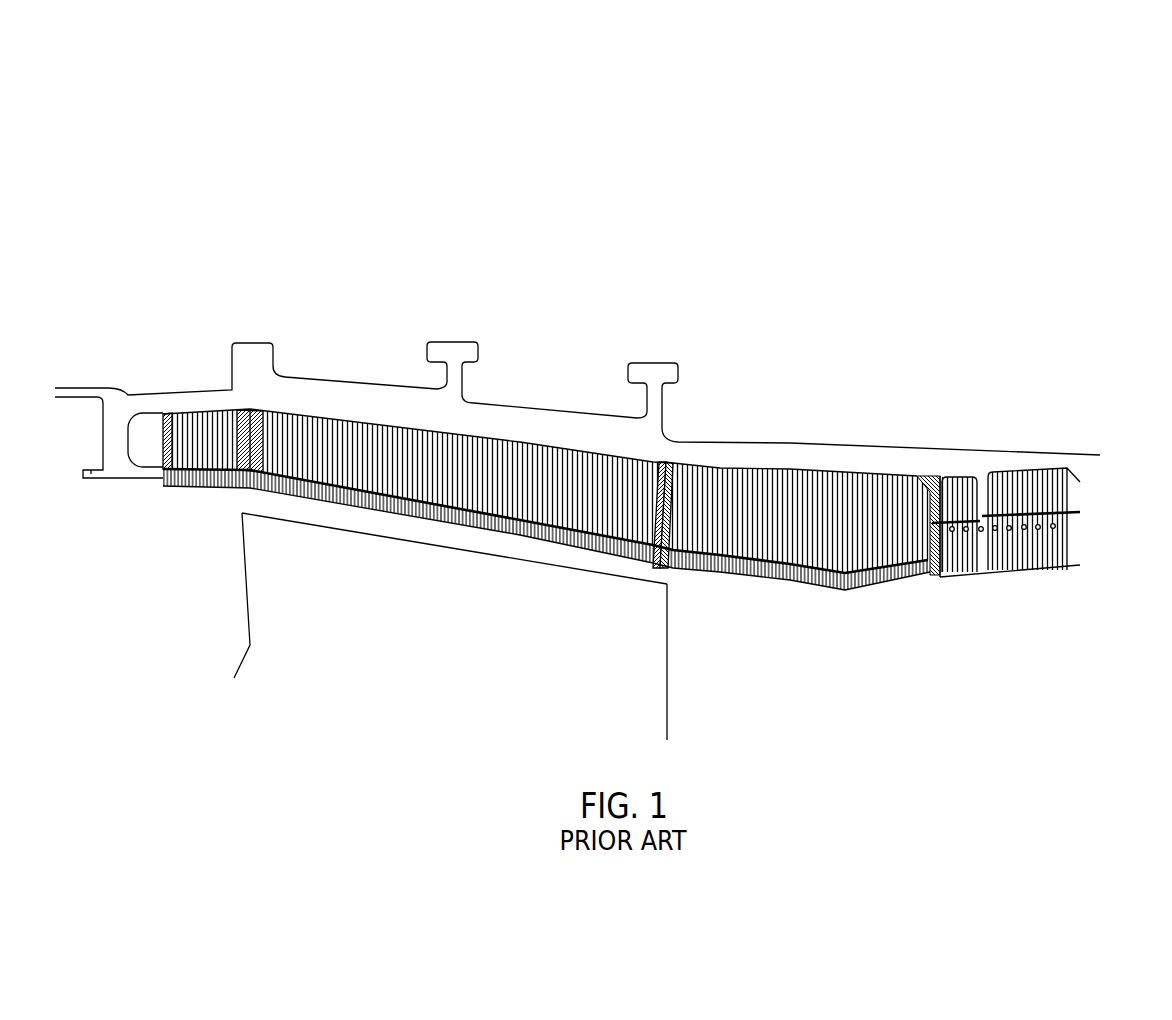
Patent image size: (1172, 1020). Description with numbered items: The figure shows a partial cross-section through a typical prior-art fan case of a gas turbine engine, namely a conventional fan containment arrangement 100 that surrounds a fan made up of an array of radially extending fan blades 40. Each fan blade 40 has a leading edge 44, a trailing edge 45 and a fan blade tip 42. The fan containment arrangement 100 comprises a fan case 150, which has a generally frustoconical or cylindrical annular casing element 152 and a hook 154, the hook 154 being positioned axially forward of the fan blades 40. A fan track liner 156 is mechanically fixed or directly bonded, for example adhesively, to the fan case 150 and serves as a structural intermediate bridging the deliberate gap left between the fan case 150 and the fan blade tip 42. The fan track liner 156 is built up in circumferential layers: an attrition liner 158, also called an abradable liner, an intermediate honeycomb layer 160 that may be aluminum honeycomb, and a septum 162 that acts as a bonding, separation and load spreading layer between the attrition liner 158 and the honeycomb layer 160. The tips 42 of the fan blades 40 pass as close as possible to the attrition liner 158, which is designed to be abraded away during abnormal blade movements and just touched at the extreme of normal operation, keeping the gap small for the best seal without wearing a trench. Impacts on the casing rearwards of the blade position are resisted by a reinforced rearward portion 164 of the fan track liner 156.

The fan containment arrangement 100 is at (577, 403).
The fan case 150 is at (773, 453).
The annular casing element 152 is at (897, 445).
The hook 154 is at (122, 458).
The fan track liner 156 is at (277, 422).
The attrition liner 158 is at (438, 487).
The honeycomb layer 160 is at (518, 443).
The septum 162 is at (588, 455).
The reinforced rearward portion 164 is at (880, 568).
The fan blade 40 is at (288, 605).
The fan blade tip 42 is at (309, 508).
The leading edge 44 is at (211, 547).
The trailing edge 45 is at (667, 657).